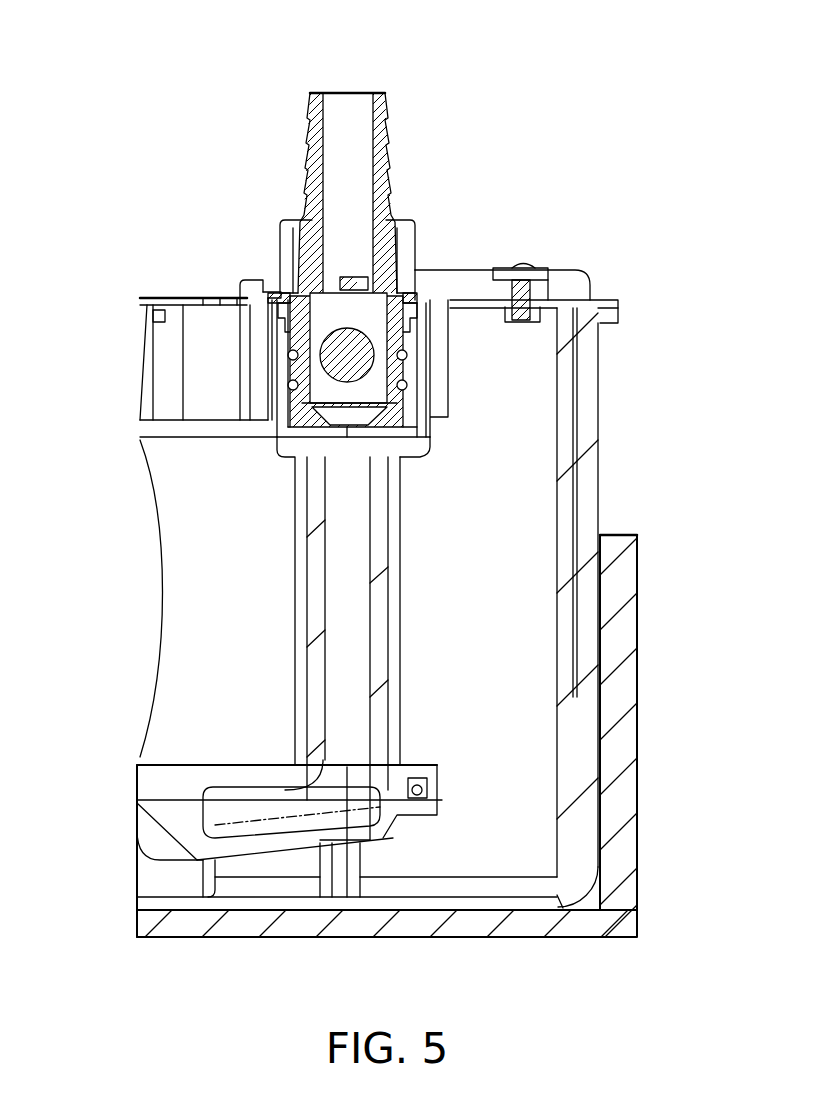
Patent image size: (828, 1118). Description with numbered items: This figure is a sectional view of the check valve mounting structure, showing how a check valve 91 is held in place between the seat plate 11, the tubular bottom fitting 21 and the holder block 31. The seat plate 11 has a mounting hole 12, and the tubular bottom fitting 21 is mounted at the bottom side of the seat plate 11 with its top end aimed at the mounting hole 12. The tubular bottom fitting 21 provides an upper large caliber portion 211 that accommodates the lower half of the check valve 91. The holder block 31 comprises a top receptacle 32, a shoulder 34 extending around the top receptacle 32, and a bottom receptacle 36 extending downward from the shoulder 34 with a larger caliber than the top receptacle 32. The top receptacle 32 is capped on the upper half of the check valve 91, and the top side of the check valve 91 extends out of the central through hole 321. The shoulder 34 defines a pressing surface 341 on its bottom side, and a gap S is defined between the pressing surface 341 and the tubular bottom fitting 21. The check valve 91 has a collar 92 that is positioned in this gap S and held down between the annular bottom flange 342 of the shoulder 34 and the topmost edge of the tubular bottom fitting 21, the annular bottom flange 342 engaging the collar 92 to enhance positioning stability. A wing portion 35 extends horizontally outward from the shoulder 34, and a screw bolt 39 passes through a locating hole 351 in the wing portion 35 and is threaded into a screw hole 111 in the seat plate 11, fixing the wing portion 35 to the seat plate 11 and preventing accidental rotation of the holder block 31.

The check valve 91 is at (381, 88).
The through hole 321 is at (392, 217).
The holder block 31 is at (421, 208).
The top receptacle 32 is at (420, 243).
The collar 92 is at (432, 298).
The annular bottom flange 342 is at (266, 297).
The shoulder 34 is at (265, 284).
The pressing surface 341 is at (271, 291).
The gap S is at (270, 300).
The bottom receptacle 36 is at (452, 383).
The upper large caliber portion 211 is at (445, 438).
The wing portion 35 is at (525, 265).
The screw bolt 39 is at (535, 266).
The locating hole 351 is at (540, 290).
The screw hole 111 is at (455, 306).
The mounting hole 12 is at (460, 368).
The tubular bottom fitting 21 is at (432, 458).
The seat plate 11 is at (155, 297).